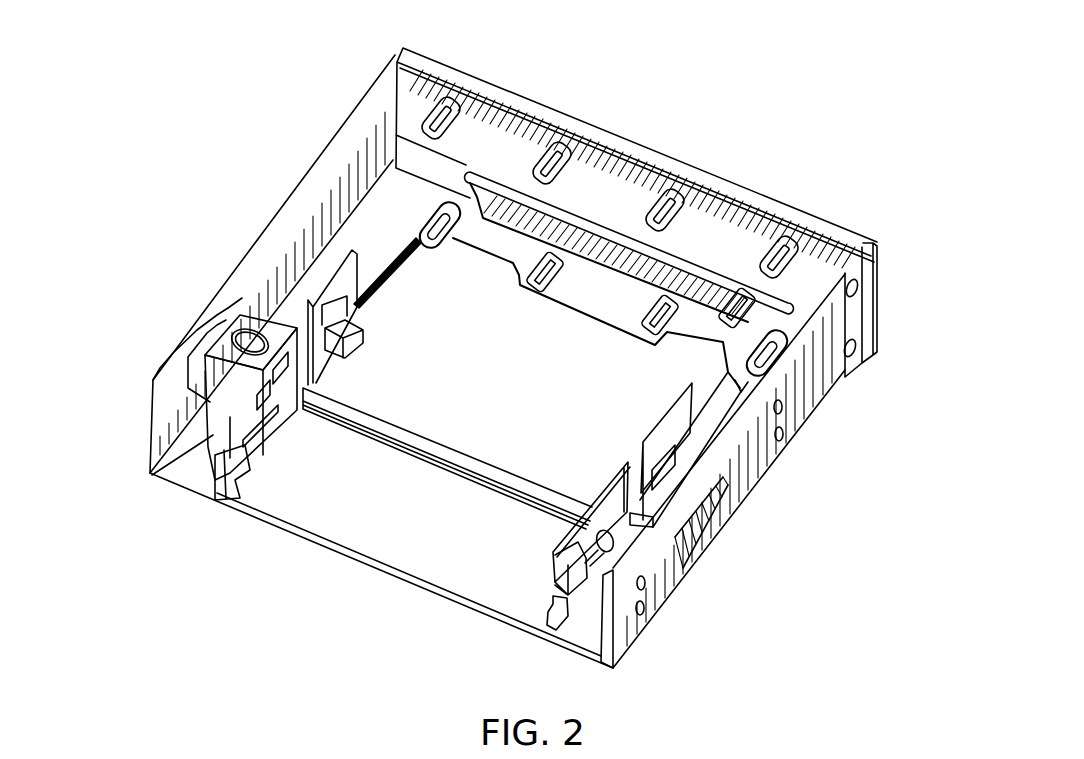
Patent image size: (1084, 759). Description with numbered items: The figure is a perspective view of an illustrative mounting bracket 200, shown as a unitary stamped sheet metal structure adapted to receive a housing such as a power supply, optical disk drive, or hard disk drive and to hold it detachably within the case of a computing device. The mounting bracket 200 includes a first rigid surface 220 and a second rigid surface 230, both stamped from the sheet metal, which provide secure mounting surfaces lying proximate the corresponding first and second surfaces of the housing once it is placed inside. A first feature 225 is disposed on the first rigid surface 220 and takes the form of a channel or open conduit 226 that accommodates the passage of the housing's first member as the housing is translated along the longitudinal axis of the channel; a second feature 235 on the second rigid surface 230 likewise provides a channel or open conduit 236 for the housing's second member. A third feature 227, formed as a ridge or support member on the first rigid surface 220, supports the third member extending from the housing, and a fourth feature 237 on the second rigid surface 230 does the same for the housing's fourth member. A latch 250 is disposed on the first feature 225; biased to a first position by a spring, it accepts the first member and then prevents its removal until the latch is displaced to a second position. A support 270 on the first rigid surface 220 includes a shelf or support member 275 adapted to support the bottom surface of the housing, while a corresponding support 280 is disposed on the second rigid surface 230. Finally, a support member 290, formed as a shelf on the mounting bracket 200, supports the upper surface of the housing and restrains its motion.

The mounting bracket 200 is at (770, 82).
The first rigid surface 220 is at (362, 167).
The first feature 225 is at (216, 437).
The channel or open conduit 226 is at (223, 462).
The third feature 227 is at (398, 266).
The second rigid surface 230 is at (753, 456).
The second feature 235 is at (555, 555).
The channel or open conduit 236 is at (550, 603).
The fourth feature 237 is at (742, 391).
The latch 250 is at (240, 322).
The support 270 is at (338, 262).
The shelf or support member 275 is at (358, 340).
The support 280 is at (650, 425).
The support member 290 is at (535, 250).